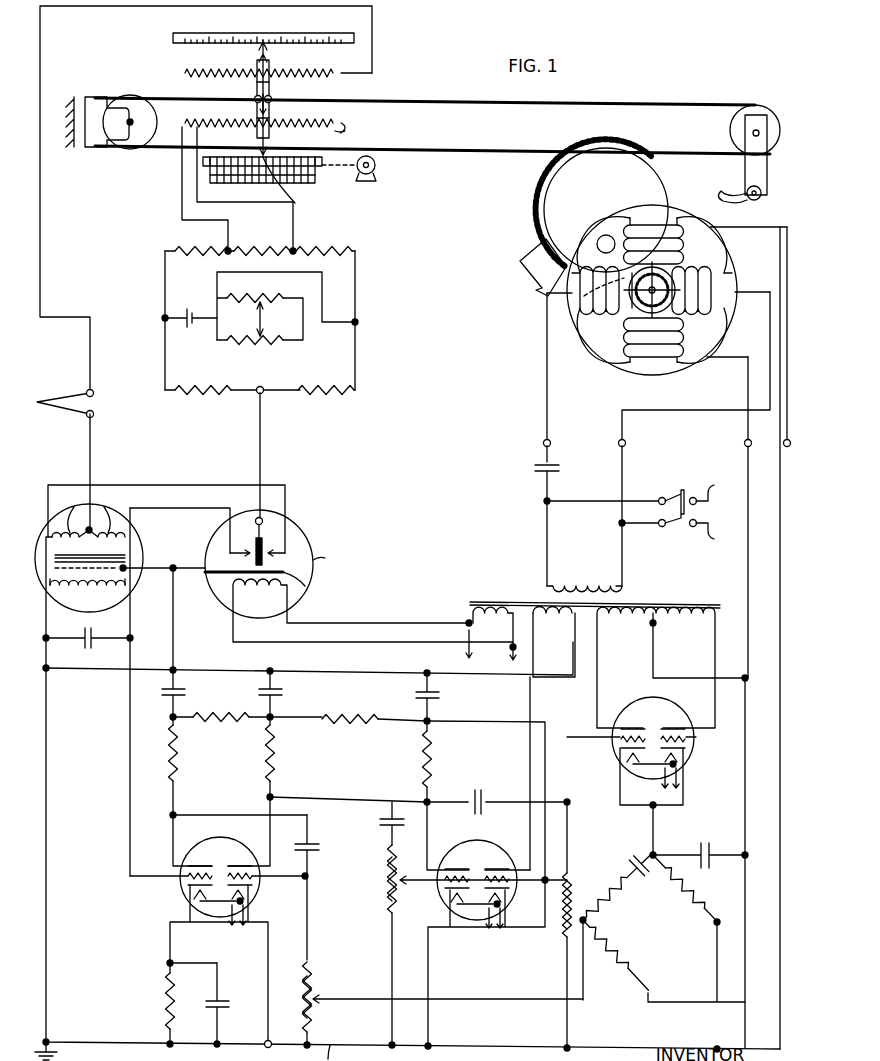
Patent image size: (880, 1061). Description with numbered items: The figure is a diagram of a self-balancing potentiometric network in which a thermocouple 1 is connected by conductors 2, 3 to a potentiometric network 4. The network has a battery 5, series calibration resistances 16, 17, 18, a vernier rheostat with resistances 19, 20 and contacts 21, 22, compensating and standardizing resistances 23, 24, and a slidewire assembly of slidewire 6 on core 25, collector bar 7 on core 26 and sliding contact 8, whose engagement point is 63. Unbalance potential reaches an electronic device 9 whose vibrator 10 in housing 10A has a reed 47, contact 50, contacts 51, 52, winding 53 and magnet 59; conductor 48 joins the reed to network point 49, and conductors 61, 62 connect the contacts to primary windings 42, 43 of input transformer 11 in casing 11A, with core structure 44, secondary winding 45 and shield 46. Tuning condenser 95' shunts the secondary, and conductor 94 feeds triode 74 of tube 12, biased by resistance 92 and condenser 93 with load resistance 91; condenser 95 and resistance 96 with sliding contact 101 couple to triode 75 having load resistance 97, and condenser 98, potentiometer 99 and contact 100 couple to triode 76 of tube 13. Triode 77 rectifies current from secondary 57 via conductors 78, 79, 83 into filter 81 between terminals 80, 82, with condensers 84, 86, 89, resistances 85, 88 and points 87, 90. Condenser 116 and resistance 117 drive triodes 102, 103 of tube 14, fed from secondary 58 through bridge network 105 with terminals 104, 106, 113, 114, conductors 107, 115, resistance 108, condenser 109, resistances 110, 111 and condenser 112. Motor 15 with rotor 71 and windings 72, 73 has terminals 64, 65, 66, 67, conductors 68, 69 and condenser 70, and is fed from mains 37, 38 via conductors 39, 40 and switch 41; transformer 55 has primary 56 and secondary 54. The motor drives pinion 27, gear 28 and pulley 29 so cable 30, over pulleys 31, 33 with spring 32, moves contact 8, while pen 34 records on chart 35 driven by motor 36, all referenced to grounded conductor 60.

The thermocouple 1 is at (56, 378).
The conductor 2 is at (42, 262).
The conductor 3 is at (92, 443).
The potentiometric network 4 is at (200, 292).
The battery 5 is at (188, 323).
The slidewire resistance 6 is at (308, 120).
The collector bar 7 is at (320, 80).
The sliding contact 8 is at (256, 96).
The electronic device 9 is at (435, 577).
The vibrator 10 is at (314, 520).
The housing 10A is at (336, 549).
The input transformer 11 is at (135, 596).
The casing 11A is at (138, 553).
The amplifying vacuum tube 12 is at (180, 888).
The amplifying vacuum tube 13 is at (473, 918).
The motor drive vacuum tube 14 is at (696, 752).
The reversible motor 15 is at (592, 350).
The resistance 16 is at (200, 246).
The resistance 17 is at (270, 246).
The resistance 18 is at (338, 246).
The resistance 19 is at (270, 284).
The resistance 20 is at (258, 348).
The sliding contact 21 is at (255, 308).
The sliding contact 22 is at (262, 334).
The resistance 23 is at (206, 392).
The resistance 24 is at (336, 392).
The core 25 is at (349, 134).
The core 26 is at (309, 54).
The pinion 27 is at (624, 314).
The gear 28 is at (537, 212).
The pulley 29 is at (560, 188).
The endless cable 30 is at (474, 150).
The pulley 31 is at (740, 126).
The spring 32 is at (740, 184).
The stationary pulley 33 is at (132, 90).
The pen 34 is at (295, 203).
The recorder chart 35 is at (318, 176).
The chart motor 36 is at (376, 165).
The supply main 37 is at (710, 489).
The supply main 38 is at (710, 538).
The conductor 39 is at (544, 541).
The conductor 40 is at (624, 552).
The switch 41 is at (685, 482).
The primary winding 42 is at (78, 517).
The primary winding 43 is at (104, 516).
The core structure 44 is at (46, 528).
The secondary winding 45 is at (80, 584).
The shield 46 is at (133, 577).
The vibrating reed 47 is at (258, 519).
The conductor 48 is at (262, 442).
The network point 49 is at (262, 393).
The contact 50 is at (262, 558).
The contact 51 is at (273, 542).
The contact 52 is at (240, 542).
The winding 53 is at (250, 590).
The secondary winding 54 is at (491, 633).
The transformer 55 is at (466, 603).
The primary winding 56 is at (588, 583).
The secondary winding 57 is at (562, 630).
The secondary winding 58 is at (634, 630).
The permanent magnet 59 is at (312, 586).
The grounded conductor 60 is at (55, 805).
The conductor 61 is at (182, 482).
The conductor 62 is at (154, 508).
The point of engagement 63 is at (260, 118).
The motor terminal 64 is at (786, 442).
The motor terminal 65 is at (745, 442).
The motor terminal 66 is at (622, 440).
The motor terminal 67 is at (544, 440).
The conductor 68 is at (624, 466).
The conductor 69 is at (544, 451).
The condenser 70 is at (534, 467).
The rotor 71 is at (639, 261).
The winding 72 is at (710, 272).
The winding 73 is at (680, 322).
The triode 74 is at (202, 844).
The triode 75 is at (238, 846).
The triode 76 is at (447, 852).
The triode 77 is at (508, 852).
The conductor 78 is at (532, 700).
The conductor 79 is at (486, 722).
The positive terminal 80 is at (423, 724).
The filter 81 is at (360, 668).
The negative terminal 82 is at (428, 670).
The conductor 83 is at (240, 672).
The condenser 84 is at (440, 700).
The resistance 85 is at (354, 724).
The condenser 86 is at (282, 692).
The filter point 87 is at (270, 720).
The resistance 88 is at (238, 727).
The condenser 89 is at (185, 692).
The filter point 90 is at (168, 718).
The fixed resistance 91 is at (177, 762).
The cathode biasing resistance 92 is at (164, 997).
The condenser 93 is at (230, 1002).
The conductor 94 is at (132, 753).
The condenser 95 is at (325, 887).
The tuning condenser 95' is at (88, 632).
The resistance 96 is at (318, 978).
The fixed resistance 97 is at (274, 762).
The condenser 98 is at (378, 820).
The potentiometer resistance 99 is at (380, 882).
The contact 100 is at (420, 884).
The sliding contact 101 is at (322, 1000).
The triode 102 is at (633, 720).
The triode 103 is at (678, 720).
The input terminal 104 is at (650, 852).
The bridge network 105 is at (655, 924).
The input terminal 106 is at (743, 852).
The conductor 107 is at (699, 679).
The resistance 108 is at (608, 876).
The condenser 109 is at (630, 860).
The fixed resistance 110 is at (703, 882).
The fixed resistance 111 is at (628, 940).
The condenser 112 is at (704, 837).
The output terminal 113 is at (706, 924).
The output terminal 114 is at (584, 884).
The conductor 115 is at (500, 998).
The condenser 116 is at (483, 786).
The fixed resistance 117 is at (560, 920).